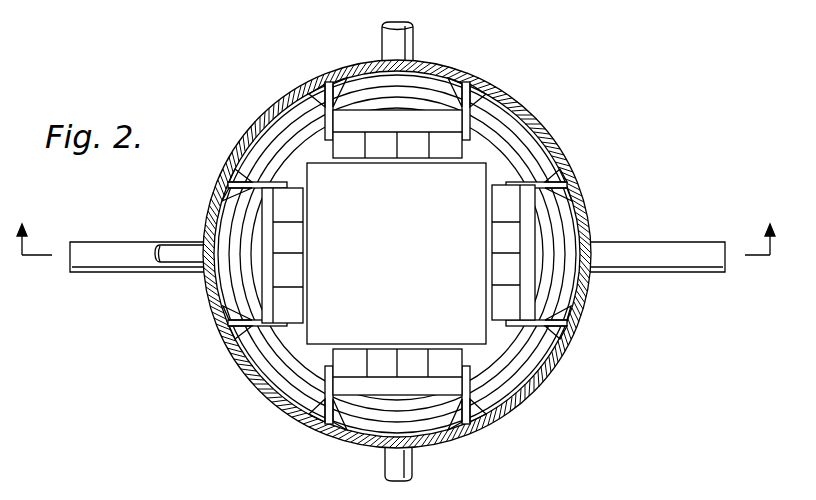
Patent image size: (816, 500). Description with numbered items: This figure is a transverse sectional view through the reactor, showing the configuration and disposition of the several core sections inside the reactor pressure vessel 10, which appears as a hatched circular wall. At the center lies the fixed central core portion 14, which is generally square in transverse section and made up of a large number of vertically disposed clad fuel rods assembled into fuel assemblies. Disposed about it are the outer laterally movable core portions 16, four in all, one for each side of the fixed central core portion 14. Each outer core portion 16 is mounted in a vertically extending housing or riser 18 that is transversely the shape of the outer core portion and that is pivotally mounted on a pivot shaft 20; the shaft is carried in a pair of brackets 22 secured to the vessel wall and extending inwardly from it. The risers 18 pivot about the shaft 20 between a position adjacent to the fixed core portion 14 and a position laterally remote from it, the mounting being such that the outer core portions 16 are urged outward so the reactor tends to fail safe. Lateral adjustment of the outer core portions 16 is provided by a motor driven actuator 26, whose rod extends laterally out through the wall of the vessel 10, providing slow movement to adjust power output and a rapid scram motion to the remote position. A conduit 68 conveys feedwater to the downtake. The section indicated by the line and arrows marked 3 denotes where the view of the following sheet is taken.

The reactor pressure vessel 10 is at (554, 369).
The fixed central core portion 14 is at (341, 323).
The outer laterally movable core portions 16 is at (370, 142).
The riser 18 is at (432, 130).
The pivot shaft 20 is at (322, 126).
The brackets 22 is at (261, 162).
The motor driven actuator 26 is at (418, 42).
The conduit 68 is at (184, 273).
The section line 3- 3 is at (395, 226).